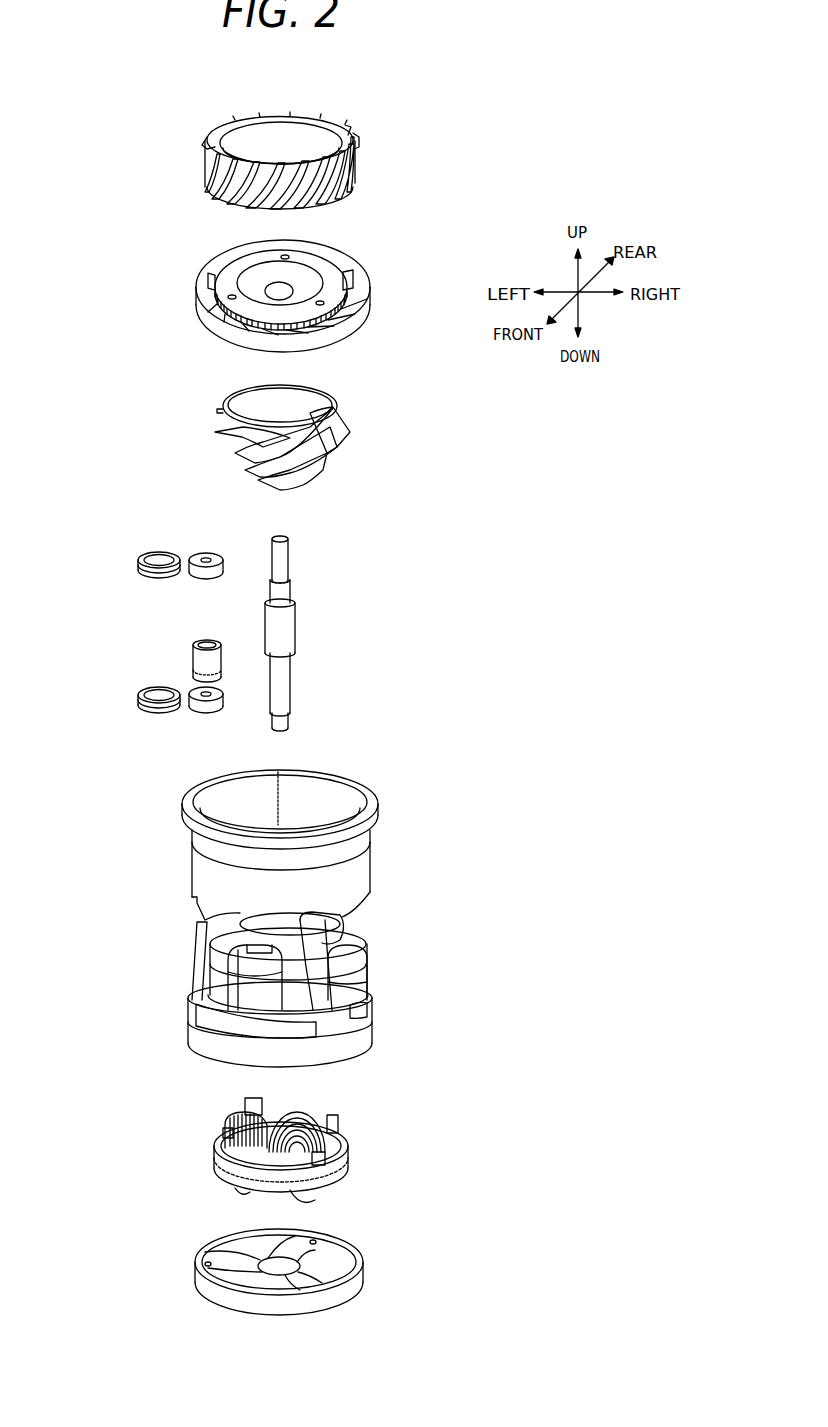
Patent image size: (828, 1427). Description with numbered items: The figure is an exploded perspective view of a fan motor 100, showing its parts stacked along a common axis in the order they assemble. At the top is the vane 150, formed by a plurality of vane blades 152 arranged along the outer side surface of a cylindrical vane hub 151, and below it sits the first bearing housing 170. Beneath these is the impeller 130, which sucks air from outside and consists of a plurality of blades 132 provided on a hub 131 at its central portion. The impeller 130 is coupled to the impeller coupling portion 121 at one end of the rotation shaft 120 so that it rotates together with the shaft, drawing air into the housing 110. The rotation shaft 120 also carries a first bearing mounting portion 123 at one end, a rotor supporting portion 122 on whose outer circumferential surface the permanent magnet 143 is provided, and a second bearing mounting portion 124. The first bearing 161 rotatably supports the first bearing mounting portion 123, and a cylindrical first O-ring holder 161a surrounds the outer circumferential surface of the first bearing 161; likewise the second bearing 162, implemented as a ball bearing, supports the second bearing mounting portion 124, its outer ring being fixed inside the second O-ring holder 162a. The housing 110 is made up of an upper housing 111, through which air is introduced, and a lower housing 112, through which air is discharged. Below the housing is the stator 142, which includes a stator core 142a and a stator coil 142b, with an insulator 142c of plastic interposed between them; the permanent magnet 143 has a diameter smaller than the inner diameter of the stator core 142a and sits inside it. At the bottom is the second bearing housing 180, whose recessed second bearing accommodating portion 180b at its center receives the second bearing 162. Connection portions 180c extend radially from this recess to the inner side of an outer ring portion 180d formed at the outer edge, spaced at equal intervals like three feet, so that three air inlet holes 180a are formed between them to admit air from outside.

The fan motor 100 is at (120, 94).
The housing 110 is at (333, 918).
The upper housing 111 is at (445, 900).
The lower housing 112 is at (345, 887).
The rotation shaft 120 is at (313, 630).
The impeller coupling portion 121 is at (286, 594).
The rotor supporting portion 122 is at (284, 680).
The first bearing mounting portion 123 is at (290, 548).
The second bearing mounting portion 124 is at (288, 720).
The impeller 130 is at (334, 437).
The hub 131 is at (332, 406).
The blades 132 is at (340, 432).
The stator 142 is at (222, 1147).
The stator core 142a is at (223, 1170).
The stator coil 142b is at (228, 1138).
The insulator 142c is at (270, 1128).
The permanent magnet 143 is at (195, 655).
The vane 150 is at (328, 168).
The vane hub 151 is at (352, 158).
The vane blades 152 is at (345, 185).
The first bearing 161 is at (200, 553).
The first O-ring holder 161a is at (140, 560).
The second bearing 162 is at (207, 708).
The second O-ring holder 162a is at (140, 700).
The first bearing housing 170 is at (350, 322).
The second bearing housing 180 is at (223, 1274).
The air inlet holes 180a is at (223, 1278).
The second bearing accommodating portion 180b is at (267, 1262).
The connection portion 180c is at (225, 1263).
The outer ring portion 180d is at (240, 1310).